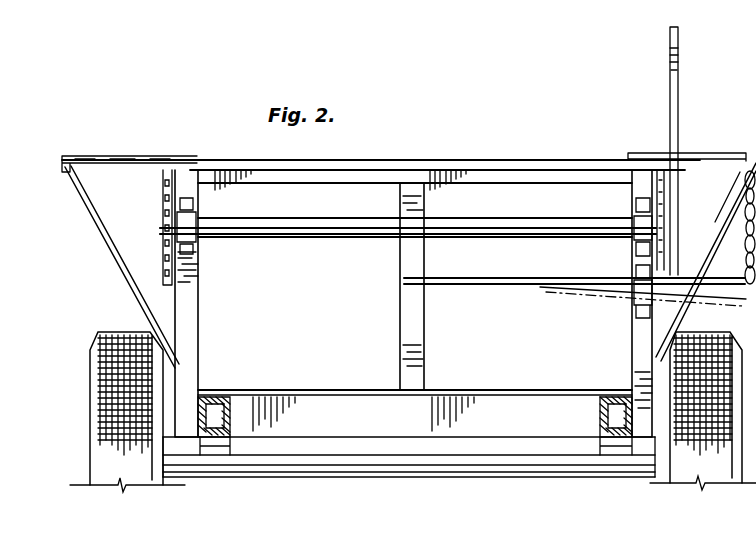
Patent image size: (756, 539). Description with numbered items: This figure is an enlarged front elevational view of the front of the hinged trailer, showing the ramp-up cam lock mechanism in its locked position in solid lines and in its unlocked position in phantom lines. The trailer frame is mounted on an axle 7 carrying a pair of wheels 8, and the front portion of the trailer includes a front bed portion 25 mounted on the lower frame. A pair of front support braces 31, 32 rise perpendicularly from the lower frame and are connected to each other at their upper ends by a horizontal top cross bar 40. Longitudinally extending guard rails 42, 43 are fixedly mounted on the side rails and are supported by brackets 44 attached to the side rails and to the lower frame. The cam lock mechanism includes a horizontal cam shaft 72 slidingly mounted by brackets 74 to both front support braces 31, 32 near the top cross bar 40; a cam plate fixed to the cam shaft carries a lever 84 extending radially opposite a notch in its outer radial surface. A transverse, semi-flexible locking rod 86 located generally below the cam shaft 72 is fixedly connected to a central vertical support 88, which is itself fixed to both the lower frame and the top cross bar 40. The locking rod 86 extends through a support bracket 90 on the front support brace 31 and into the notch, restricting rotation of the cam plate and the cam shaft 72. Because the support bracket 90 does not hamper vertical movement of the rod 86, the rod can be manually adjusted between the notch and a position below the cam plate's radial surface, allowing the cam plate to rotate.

The axle 7 is at (245, 474).
The wheels 8 is at (102, 361).
The front bed portion 25 is at (248, 392).
The front support brace 31 is at (638, 338).
The front support brace 32 is at (196, 306).
The top cross bar 40 is at (213, 170).
The guard rail 42 is at (722, 156).
The guard rail 43 is at (114, 158).
The brackets 44 is at (94, 232).
The cam shaft 72 is at (318, 222).
The brackets 74 is at (195, 223).
The lever 84 is at (679, 79).
The locking rod 86 is at (450, 287).
The central vertical support 88 is at (397, 329).
The support bracket 90 is at (636, 305).